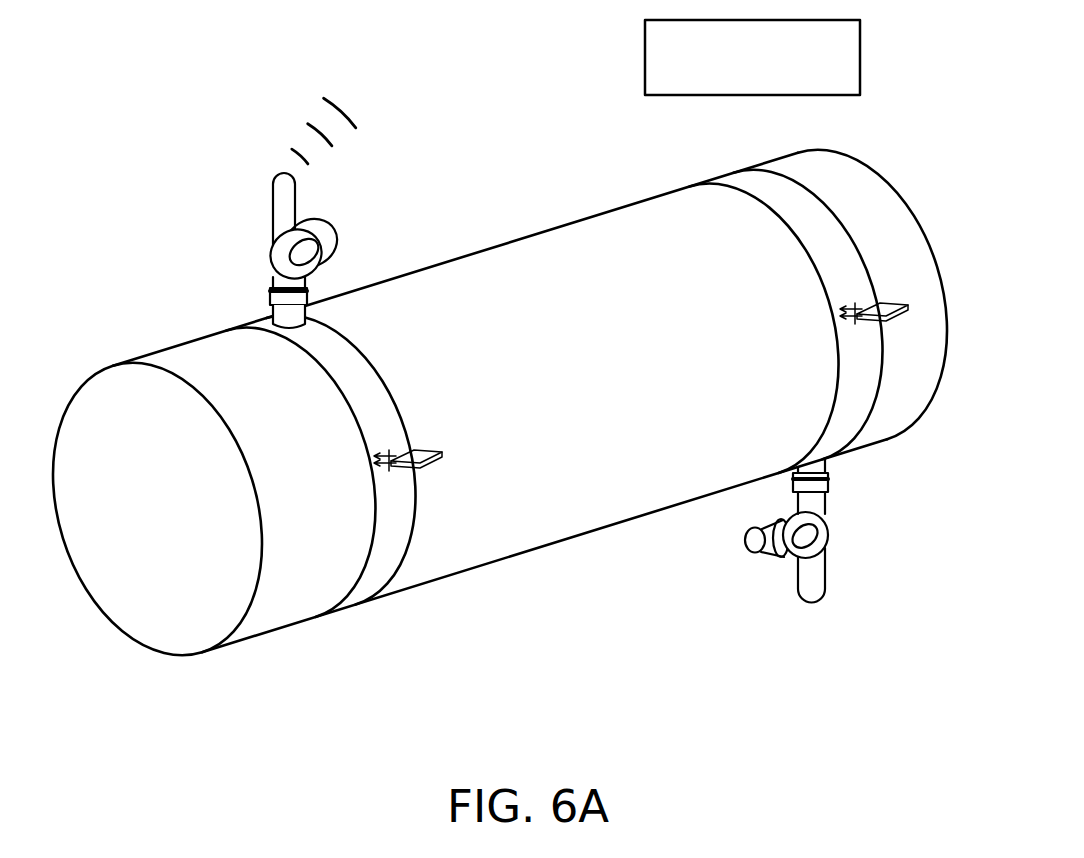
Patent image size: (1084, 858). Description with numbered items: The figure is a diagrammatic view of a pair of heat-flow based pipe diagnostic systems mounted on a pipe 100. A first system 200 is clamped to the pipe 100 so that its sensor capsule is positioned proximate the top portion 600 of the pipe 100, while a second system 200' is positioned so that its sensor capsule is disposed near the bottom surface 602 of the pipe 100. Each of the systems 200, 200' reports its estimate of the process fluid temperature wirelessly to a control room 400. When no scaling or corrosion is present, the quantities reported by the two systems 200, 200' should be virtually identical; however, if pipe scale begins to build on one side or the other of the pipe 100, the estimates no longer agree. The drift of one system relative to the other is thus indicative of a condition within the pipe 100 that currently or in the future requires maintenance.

The pipe 100 is at (512, 557).
The heat-flow based pipe diagnostic system 200 is at (328, 213).
The heat-flow based pipe diagnostic system 200' is at (830, 531).
The control room 400 is at (802, 78).
The top portion 600 is at (328, 315).
The bottom surface 602 is at (662, 512).